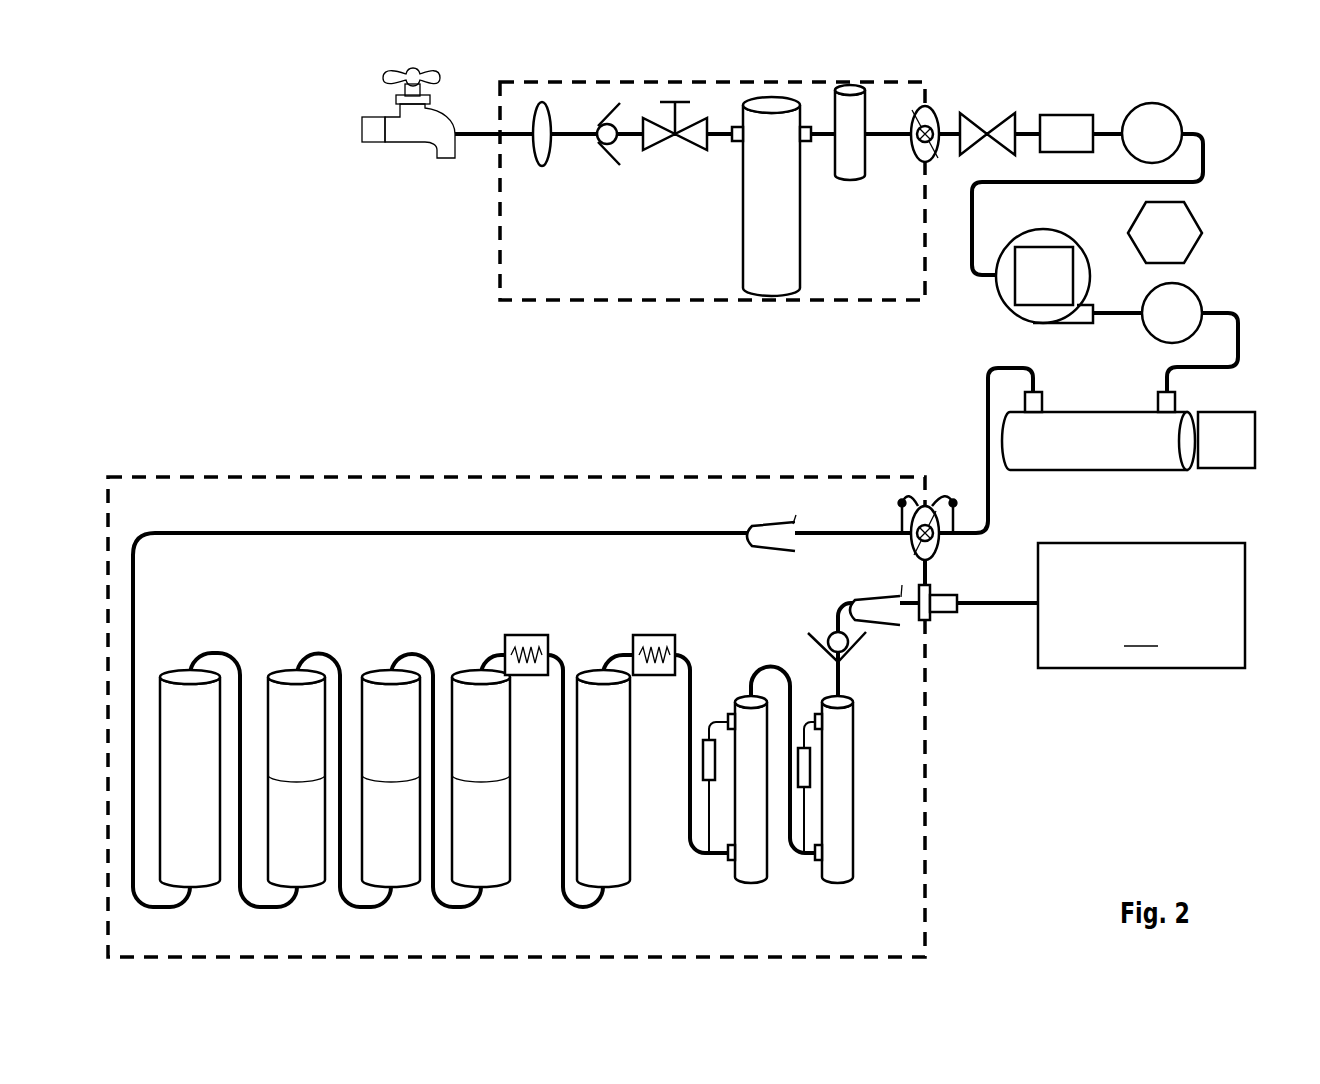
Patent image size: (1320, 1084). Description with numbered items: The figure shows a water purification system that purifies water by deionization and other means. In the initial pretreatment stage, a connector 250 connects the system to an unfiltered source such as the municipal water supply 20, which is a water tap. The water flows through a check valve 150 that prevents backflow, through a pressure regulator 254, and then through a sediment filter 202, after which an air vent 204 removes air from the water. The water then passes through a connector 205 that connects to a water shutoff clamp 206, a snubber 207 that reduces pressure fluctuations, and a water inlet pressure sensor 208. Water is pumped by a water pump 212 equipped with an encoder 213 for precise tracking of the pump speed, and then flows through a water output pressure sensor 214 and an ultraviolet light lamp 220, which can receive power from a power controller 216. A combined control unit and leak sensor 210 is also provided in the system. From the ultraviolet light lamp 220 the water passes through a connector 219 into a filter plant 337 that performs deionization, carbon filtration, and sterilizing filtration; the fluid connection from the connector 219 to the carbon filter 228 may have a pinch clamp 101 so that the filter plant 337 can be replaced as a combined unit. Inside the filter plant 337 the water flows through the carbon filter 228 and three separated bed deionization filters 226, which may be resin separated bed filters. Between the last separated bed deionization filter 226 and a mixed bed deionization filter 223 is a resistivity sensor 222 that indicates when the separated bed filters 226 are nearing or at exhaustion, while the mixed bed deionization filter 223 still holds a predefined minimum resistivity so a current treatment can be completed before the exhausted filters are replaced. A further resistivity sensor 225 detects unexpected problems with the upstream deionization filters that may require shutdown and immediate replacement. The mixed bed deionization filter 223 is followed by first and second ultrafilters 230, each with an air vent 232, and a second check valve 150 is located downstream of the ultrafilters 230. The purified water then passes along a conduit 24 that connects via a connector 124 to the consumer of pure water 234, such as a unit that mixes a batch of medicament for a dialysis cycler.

The municipal water supply 20 is at (419, 101).
The connector 250 is at (570, 104).
The check valve 150 is at (745, 409).
The pressure regulator 254 is at (675, 165).
The sediment filter 202 is at (797, 222).
The air vent 204 is at (866, 155).
The connector 205 is at (944, 106).
The water shutoff clamp 206 is at (977, 157).
The snubber 207 is at (1068, 113).
The water inlet pressure sensor 208 is at (1172, 118).
The water pump 212 is at (1028, 270).
The encoder 213 is at (1009, 297).
The combined control unit and leak sensor 210 is at (1185, 227).
The water output pressure sensor 214 is at (1192, 300).
The ultraviolet light lamp 220 is at (1098, 460).
The power controller 216 is at (1247, 438).
The connector 219 is at (953, 544).
The connector 124 is at (952, 631).
The conduit 24 is at (985, 607).
The consumer of pure water 234 is at (1141, 605).
The pinch clamp 101 is at (798, 526).
The filter plant 337 is at (336, 519).
The carbon filter 228 is at (190, 735).
The separated bed deionization filter 226 is at (389, 736).
The resistivity sensor 222 is at (549, 633).
The mixed bed deionization filter 223 is at (628, 778).
The resistivity sensor 225 is at (676, 633).
The ultrafilter 230 is at (807, 820).
The air vent 232 is at (756, 741).